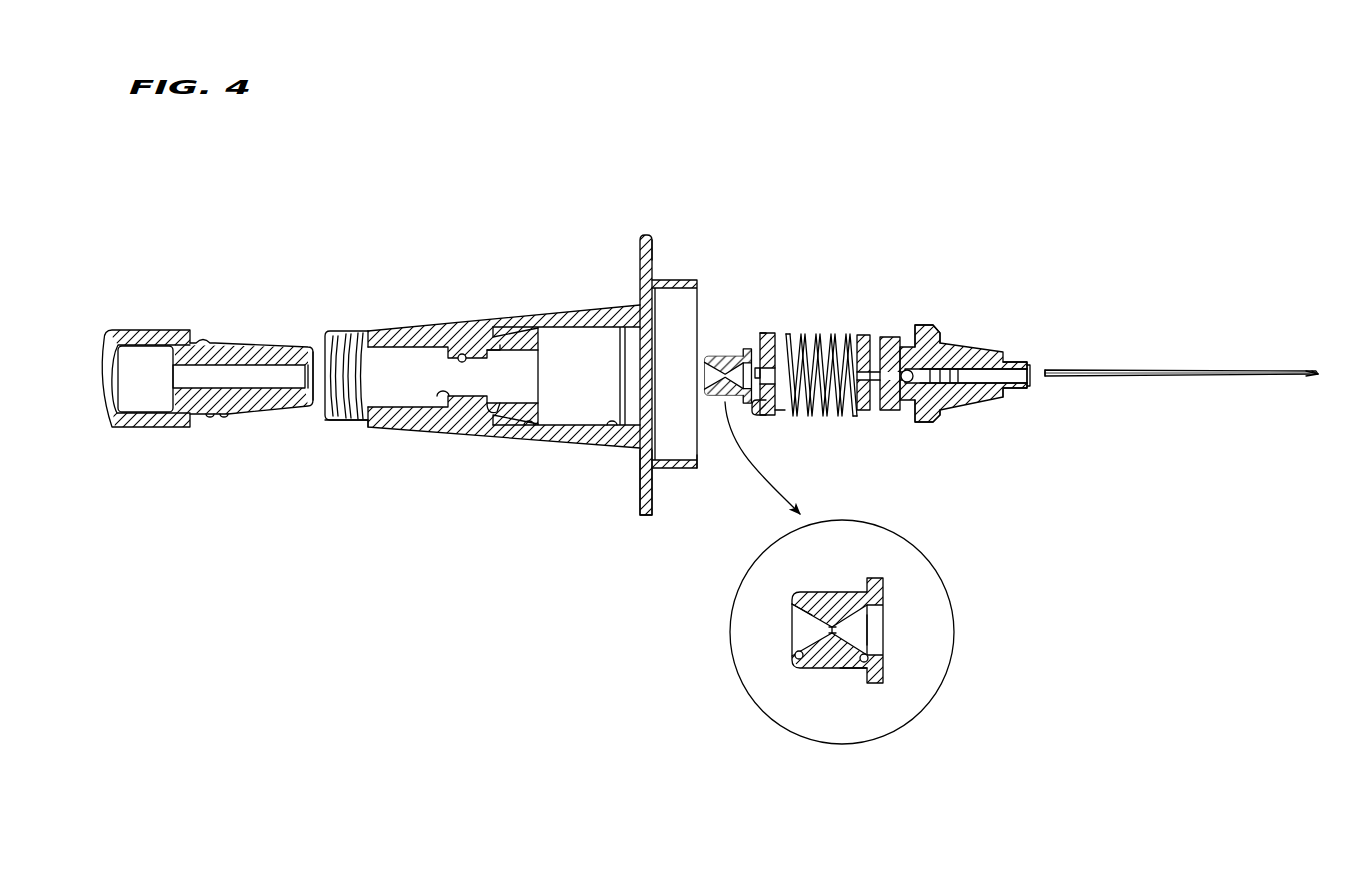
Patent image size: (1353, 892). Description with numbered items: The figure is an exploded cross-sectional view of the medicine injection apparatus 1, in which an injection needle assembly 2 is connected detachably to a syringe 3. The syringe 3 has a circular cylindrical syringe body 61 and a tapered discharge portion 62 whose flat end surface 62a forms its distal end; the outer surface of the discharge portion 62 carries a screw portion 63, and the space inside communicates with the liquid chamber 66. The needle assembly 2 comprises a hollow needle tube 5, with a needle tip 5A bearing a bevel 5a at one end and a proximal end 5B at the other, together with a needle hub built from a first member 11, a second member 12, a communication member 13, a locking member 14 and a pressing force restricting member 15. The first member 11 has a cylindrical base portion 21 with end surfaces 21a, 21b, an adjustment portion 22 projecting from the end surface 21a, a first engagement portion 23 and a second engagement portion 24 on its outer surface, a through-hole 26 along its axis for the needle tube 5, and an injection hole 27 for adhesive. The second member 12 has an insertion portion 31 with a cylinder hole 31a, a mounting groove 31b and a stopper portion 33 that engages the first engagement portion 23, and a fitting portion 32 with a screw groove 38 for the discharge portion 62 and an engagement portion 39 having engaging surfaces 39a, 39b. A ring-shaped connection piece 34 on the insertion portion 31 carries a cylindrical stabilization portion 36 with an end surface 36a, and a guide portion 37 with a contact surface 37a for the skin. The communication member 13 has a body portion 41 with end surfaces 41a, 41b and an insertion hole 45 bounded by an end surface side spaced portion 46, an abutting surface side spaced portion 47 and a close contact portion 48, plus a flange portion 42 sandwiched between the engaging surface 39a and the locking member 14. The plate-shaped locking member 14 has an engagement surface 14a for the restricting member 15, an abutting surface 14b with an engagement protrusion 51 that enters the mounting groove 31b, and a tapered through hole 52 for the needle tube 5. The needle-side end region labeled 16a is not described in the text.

The medicine injection apparatus 1 is at (1148, 112).
The injection needle assembly 2 is at (512, 572).
The syringe 3 is at (116, 297).
The needle tube 5 is at (1170, 377).
The needle tip 5A is at (1313, 382).
The proximal end 5B is at (1049, 381).
The bevel 5a is at (1316, 370).
The first member 11 is at (979, 282).
The second member 12 is at (577, 207).
The communication member 13 is at (716, 345).
The locking member 14 is at (762, 334).
The engagement surface 14a is at (775, 366).
The abutting surface 14b is at (762, 410).
The pressing force restricting member 15 is at (800, 333).
The needle attachment end 16a is at (1028, 363).
The base portion 21 is at (955, 344).
The end surface 21a is at (1000, 397).
The end surface 21b is at (862, 412).
The adjustment portion 22 is at (1012, 360).
The first engagement portion 23 is at (928, 325).
The second engagement portion 24 is at (866, 334).
The through-hole 26 is at (975, 384).
The injection hole 27 is at (905, 385).
The insertion portion 31 is at (549, 317).
The cylinder hole 31a is at (529, 427).
The mounting groove 31b is at (505, 345).
The fitting portion 32 is at (398, 327).
The stopper portion 33 is at (608, 426).
The connection piece 34 is at (641, 500).
The stabilization portion 36 is at (672, 470).
The end surface 36a is at (699, 467).
The guide portion 37 is at (643, 236).
The contact surface 37a is at (654, 246).
The screw groove 38 is at (333, 335).
The engagement portion 39 is at (462, 354).
The engaging surface 39a is at (497, 414).
The engaging surface 39b is at (437, 428).
The body portion 41 is at (832, 670).
The end surface 41a is at (884, 665).
The end surface 41b is at (795, 600).
The flange portion 42 is at (873, 685).
The insertion hole 45 is at (876, 631).
The end surface side spaced portion 46 is at (853, 670).
The abutting surface side spaced portion 47 is at (796, 655).
The close contact portion 48 is at (829, 596).
The engagement protrusion 51 is at (759, 337).
The through hole 52 is at (780, 412).
The syringe body 61 is at (145, 429).
The discharge portion 62 is at (265, 408).
The end surface 62a is at (318, 402).
The screw portion 63 is at (218, 418).
The liquid chamber 66 is at (152, 366).